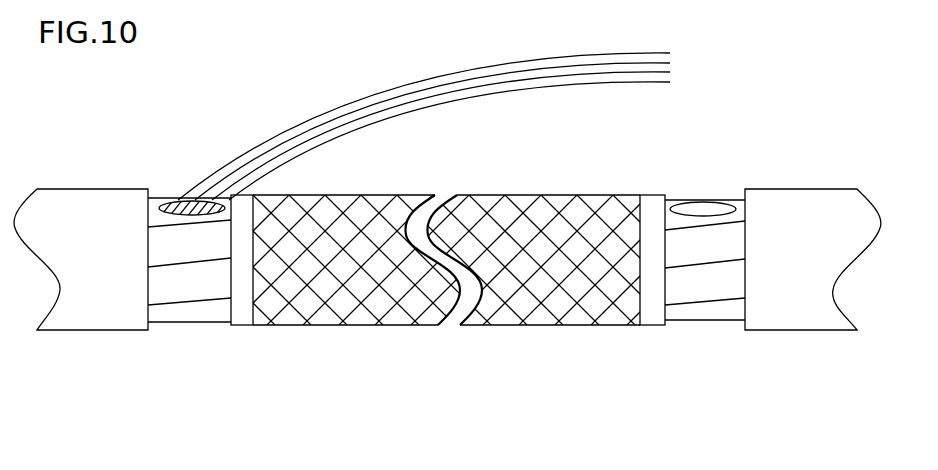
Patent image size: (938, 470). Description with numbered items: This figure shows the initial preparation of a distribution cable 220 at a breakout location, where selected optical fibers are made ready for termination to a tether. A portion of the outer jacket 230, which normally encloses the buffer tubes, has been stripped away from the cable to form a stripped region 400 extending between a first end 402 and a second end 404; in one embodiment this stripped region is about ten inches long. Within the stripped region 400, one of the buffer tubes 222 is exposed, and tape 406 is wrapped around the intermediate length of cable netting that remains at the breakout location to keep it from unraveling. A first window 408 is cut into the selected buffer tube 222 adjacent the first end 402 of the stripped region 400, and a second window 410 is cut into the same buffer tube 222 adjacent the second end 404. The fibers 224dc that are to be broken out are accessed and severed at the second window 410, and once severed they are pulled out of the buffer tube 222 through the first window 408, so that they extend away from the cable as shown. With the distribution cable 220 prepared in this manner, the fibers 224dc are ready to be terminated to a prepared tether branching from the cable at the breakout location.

The distribution cable 220 is at (792, 336).
The outer jacket 230 is at (447, 270).
The buffer tube 222 is at (447, 242).
The fibers 224dc is at (442, 73).
The stripped region 400 is at (498, 364).
The first end 402 is at (200, 244).
The second end 404 is at (701, 248).
The tape 406 is at (241, 323).
The first window 408 is at (216, 199).
The second window 410 is at (688, 201).